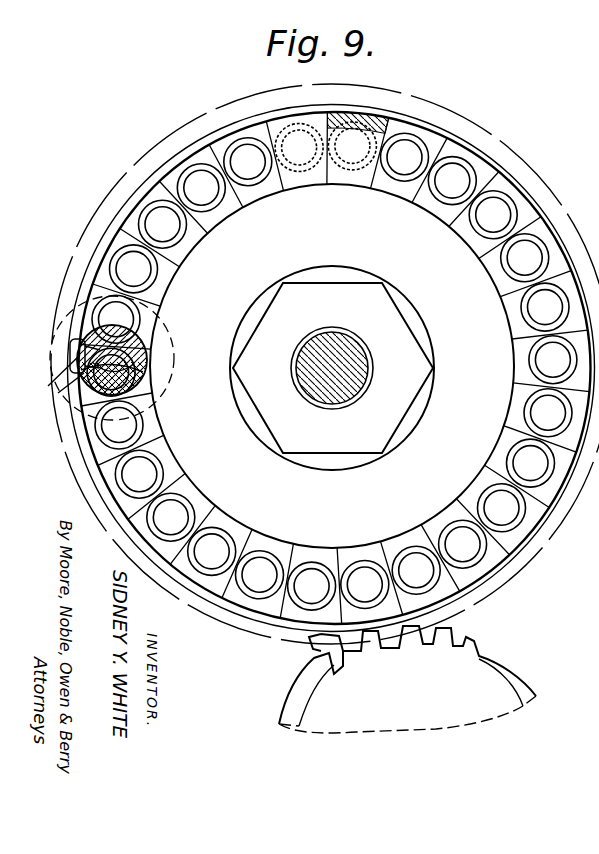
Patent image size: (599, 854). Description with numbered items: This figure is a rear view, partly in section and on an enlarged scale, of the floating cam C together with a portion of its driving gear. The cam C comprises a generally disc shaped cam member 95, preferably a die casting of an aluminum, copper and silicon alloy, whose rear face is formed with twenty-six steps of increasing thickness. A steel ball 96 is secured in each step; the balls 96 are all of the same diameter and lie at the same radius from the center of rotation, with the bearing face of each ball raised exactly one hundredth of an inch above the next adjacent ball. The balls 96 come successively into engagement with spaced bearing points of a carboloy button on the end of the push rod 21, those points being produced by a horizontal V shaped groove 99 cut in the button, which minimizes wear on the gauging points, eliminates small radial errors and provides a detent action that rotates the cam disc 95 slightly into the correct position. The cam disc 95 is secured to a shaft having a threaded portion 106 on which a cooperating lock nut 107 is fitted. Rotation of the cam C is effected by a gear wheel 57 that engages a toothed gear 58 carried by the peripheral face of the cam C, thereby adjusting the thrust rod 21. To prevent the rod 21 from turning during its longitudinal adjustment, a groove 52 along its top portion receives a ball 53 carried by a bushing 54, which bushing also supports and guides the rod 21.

The floating cam C is at (502, 110).
The cam member 95 is at (193, 152).
The steel ball 96 is at (302, 161).
The lock nut 107 is at (385, 322).
The threaded portion 106 is at (366, 364).
The bushing 54 is at (172, 351).
The push rod 21 is at (148, 346).
The V shaped groove 99 is at (148, 377).
The ball 53 is at (63, 342).
The groove 52 is at (72, 360).
The gear wheel 57 is at (472, 639).
The toothed gear 58 is at (318, 638).